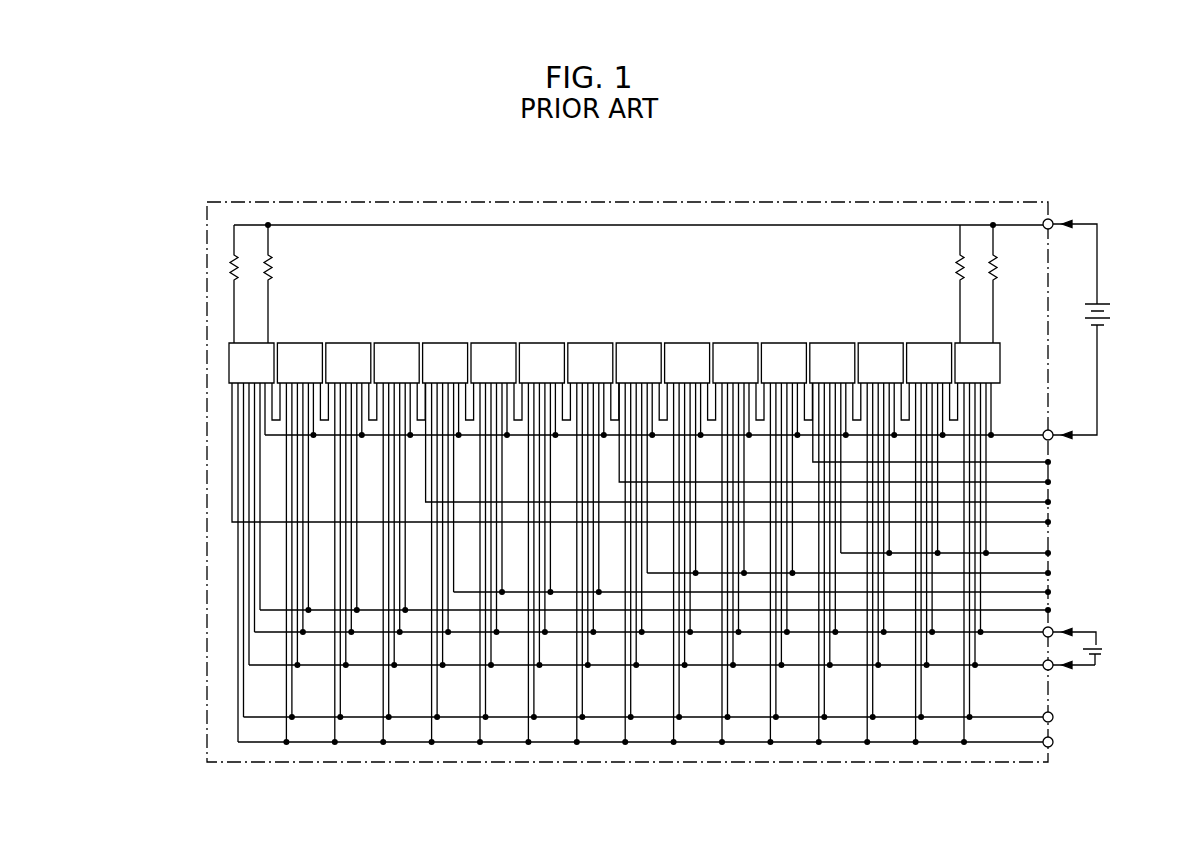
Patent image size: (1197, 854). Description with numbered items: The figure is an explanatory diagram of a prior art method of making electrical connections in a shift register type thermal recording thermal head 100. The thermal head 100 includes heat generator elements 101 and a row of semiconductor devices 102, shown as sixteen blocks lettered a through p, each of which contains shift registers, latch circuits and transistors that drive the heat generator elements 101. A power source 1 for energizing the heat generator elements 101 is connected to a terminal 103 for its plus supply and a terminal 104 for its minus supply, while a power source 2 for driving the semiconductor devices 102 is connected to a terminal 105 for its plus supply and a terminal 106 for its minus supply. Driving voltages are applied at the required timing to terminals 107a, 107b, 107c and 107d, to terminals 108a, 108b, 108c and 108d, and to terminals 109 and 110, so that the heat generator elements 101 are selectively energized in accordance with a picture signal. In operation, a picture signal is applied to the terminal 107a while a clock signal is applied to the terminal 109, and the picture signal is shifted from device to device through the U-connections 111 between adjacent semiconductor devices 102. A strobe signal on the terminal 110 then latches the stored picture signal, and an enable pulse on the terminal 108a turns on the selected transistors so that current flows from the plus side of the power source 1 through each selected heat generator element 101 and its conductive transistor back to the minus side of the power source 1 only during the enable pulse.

The power source 1 is at (1115, 313).
The power source 2 is at (1105, 648).
The thermal head 100 is at (727, 200).
The heat generator elements 101 is at (276, 270).
The semiconductor devices 102 is at (990, 358).
The terminal 103 is at (1052, 220).
The terminal 104 is at (1052, 431).
The terminal 105 is at (1053, 636).
The terminal 106 is at (1053, 668).
The terminal 107a is at (1052, 462).
The terminal 107b is at (1052, 482).
The terminal 107c is at (1052, 502).
The terminal 107d is at (1052, 522).
The terminal 108a is at (1052, 553).
The terminal 108b is at (1052, 573).
The terminal 108c is at (1052, 592).
The terminal 108d is at (1052, 610).
The terminal 109 is at (1053, 720).
The terminal 110 is at (1053, 745).
The U-connections 111 is at (279, 421).